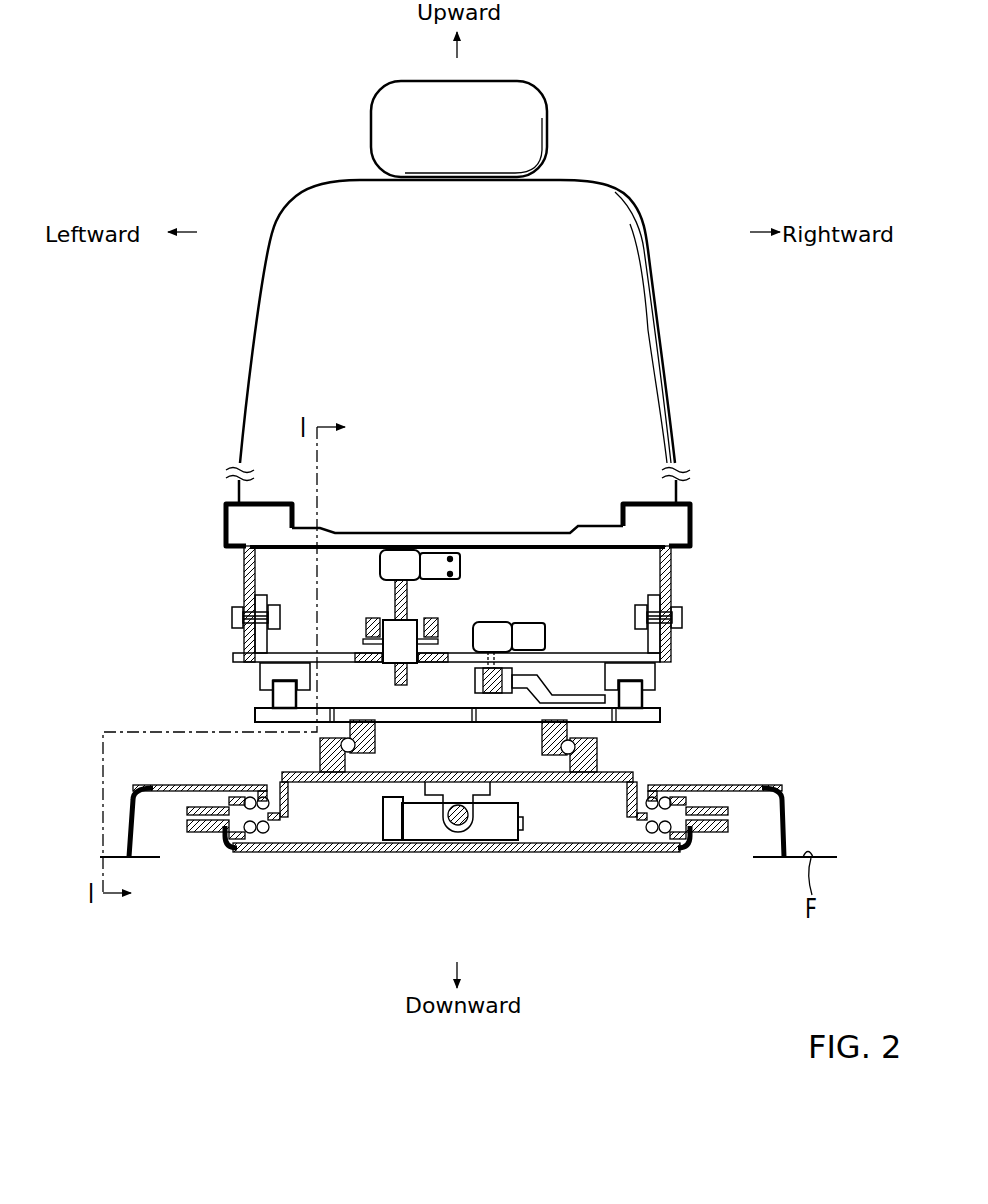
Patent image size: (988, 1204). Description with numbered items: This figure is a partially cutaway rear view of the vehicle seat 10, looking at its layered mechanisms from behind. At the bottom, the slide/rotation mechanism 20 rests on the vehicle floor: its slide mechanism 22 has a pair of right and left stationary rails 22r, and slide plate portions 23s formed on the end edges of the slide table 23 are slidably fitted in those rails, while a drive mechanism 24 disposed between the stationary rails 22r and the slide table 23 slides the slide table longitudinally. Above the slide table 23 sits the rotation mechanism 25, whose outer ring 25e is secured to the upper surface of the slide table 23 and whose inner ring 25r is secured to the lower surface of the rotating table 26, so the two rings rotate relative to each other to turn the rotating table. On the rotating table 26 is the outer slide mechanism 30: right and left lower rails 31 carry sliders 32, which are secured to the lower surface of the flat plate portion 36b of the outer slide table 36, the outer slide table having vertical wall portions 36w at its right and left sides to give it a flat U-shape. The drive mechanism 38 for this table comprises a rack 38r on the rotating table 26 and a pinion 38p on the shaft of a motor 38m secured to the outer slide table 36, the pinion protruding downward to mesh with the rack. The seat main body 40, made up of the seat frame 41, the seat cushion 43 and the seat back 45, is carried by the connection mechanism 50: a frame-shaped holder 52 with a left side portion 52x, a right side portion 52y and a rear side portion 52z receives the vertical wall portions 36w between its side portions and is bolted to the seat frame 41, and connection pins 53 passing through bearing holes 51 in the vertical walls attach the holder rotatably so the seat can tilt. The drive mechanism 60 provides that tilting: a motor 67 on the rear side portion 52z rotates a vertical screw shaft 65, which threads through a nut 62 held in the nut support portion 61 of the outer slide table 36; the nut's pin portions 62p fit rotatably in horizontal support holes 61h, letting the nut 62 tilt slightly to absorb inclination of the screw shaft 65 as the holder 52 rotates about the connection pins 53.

The vehicle seat 10 is at (483, 291).
The slide/rotation mechanism 20 is at (475, 816).
The slide mechanism 22 is at (466, 836).
The stationary rails 22r is at (228, 832).
The slide table 23 is at (457, 841).
The slide plate portions 23s is at (285, 832).
The drive mechanism 24 is at (438, 828).
The rotation mechanism 25 is at (332, 749).
The inner ring 25r is at (378, 732).
The outer ring 25e is at (378, 760).
The rotating table 26 is at (634, 720).
The outer slide mechanism 30 is at (477, 691).
The lower rails 31 is at (283, 697).
The sliders 32 is at (280, 672).
The outer slide table 36 is at (456, 586).
The vertical wall portions 36w is at (263, 594).
The flat plate portion 36b is at (330, 650).
The drive mechanism 38 is at (509, 671).
The motor 38m is at (515, 637).
The pinion 38p is at (475, 683).
The rack 38r is at (537, 690).
The seat main body 40 is at (681, 360).
The seat frame 41 is at (220, 517).
The seat cushion 43 is at (455, 501).
The seat back 45 is at (624, 322).
The connection mechanism 50 is at (444, 603).
The bearing holes 51 is at (266, 614).
The holder 52 is at (464, 572).
The left side portion 52x is at (243, 571).
The right side portion 52y is at (673, 573).
The rear side portion 52z is at (543, 560).
The connection pins 53 is at (233, 607).
The drive mechanism 60 is at (433, 590).
The nut support portion 61 is at (444, 614).
The support holes 61h is at (386, 598).
The nut 62 is at (436, 646).
The pin portions 62p is at (438, 641).
The screw shaft 65 is at (420, 597).
The motor 67 is at (402, 560).